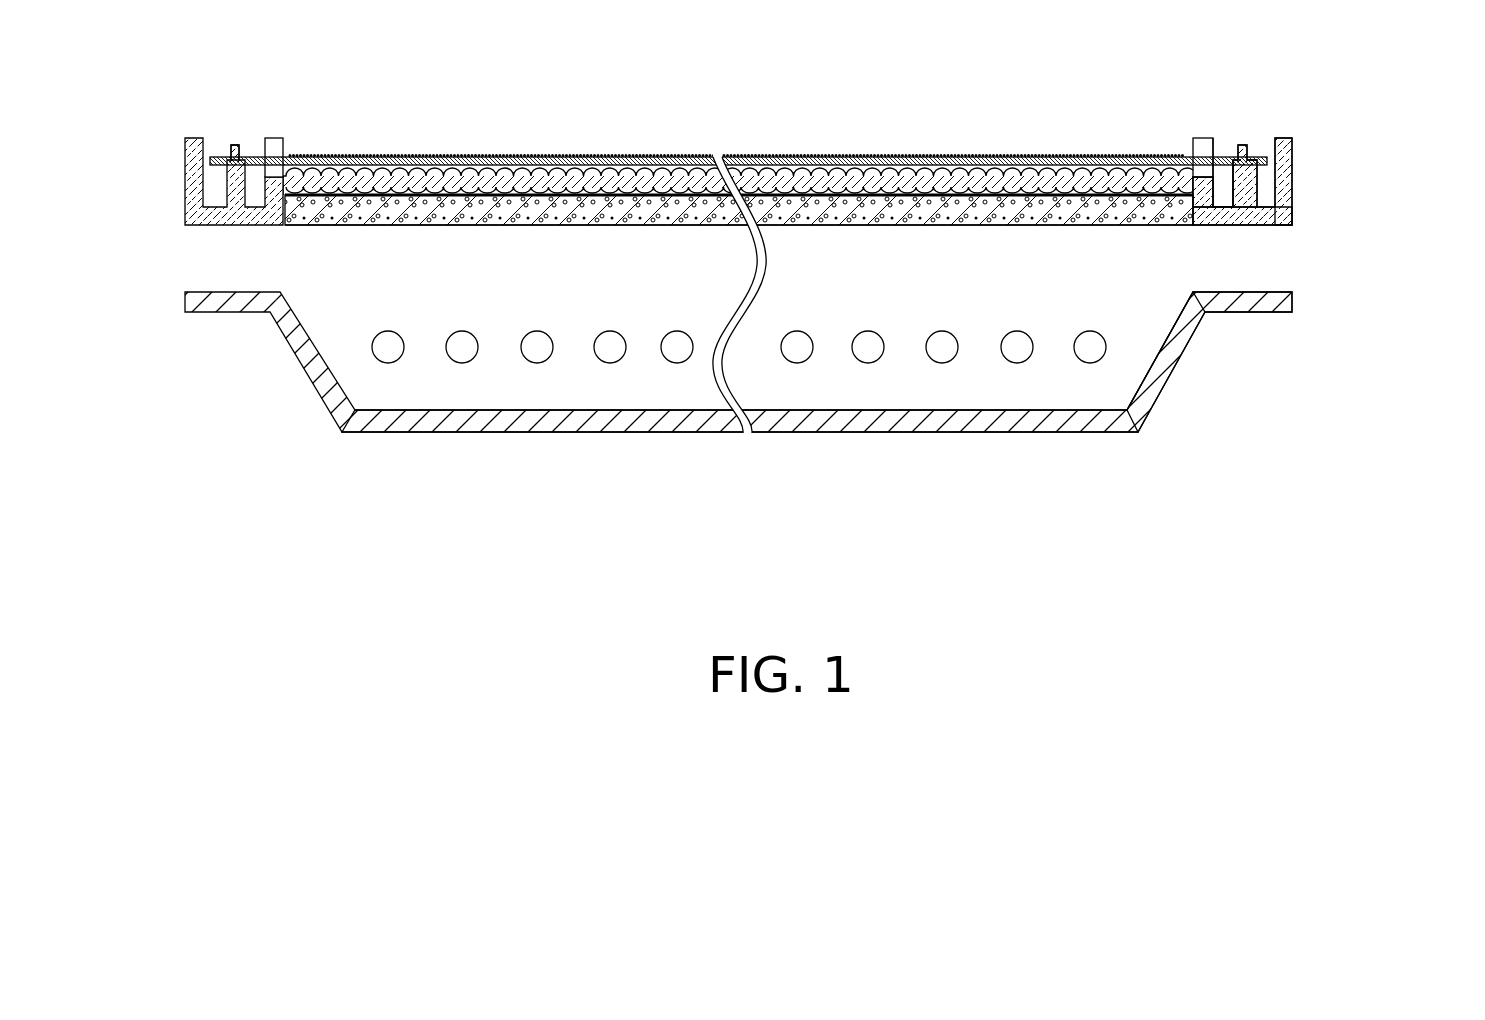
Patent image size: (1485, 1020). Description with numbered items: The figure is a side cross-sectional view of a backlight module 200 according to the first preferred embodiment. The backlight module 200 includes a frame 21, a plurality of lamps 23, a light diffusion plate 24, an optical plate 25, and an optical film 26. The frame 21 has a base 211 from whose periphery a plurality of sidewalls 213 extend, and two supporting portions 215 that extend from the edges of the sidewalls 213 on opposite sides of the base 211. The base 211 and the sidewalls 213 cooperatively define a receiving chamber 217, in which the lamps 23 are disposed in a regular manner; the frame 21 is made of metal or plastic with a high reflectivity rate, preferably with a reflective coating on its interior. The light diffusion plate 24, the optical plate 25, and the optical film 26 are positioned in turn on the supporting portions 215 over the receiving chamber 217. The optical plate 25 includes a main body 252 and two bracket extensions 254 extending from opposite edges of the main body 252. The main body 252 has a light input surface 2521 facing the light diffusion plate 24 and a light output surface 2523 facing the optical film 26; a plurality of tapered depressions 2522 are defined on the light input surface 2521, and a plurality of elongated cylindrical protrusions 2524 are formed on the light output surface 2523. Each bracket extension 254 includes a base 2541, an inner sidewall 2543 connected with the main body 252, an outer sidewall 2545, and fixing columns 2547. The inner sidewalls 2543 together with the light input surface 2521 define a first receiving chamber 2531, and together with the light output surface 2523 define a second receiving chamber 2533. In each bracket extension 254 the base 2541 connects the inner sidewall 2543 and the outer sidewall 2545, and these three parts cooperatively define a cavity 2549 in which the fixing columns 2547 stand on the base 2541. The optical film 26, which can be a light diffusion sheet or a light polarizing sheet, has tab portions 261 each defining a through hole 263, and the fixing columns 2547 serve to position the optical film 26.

The backlight module 200 is at (497, 92).
The frame 21 is at (773, 408).
The base 211 is at (1080, 418).
The sidewalls 213 is at (1157, 373).
The supporting portions 215 is at (1243, 302).
The receiving chamber 217 is at (1218, 351).
The lamps 23 is at (867, 350).
The light diffusion plate 24 is at (327, 218).
The optical plate 25 is at (844, 194).
The main body 252 is at (844, 194).
The light input surface 2521 is at (1180, 195).
The tapered depressions 2522 is at (1148, 207).
The light output surface 2523 is at (913, 177).
The elongated cylindrical protrusions 2524 is at (1025, 175).
The first receiving chamber 2531 is at (403, 197).
The second receiving chamber 2533 is at (321, 168).
The bracket extensions 254 is at (1333, 165).
The base 2541 is at (1208, 215).
The inner sidewall 2543 is at (1212, 205).
The outer sidewall 2545 is at (1292, 162).
The fixing columns 2547 is at (1255, 175).
The cavity 2549 is at (1227, 152).
The optical film 26 is at (711, 127).
The tab portions 261 is at (250, 157).
The through hole 263 is at (230, 157).